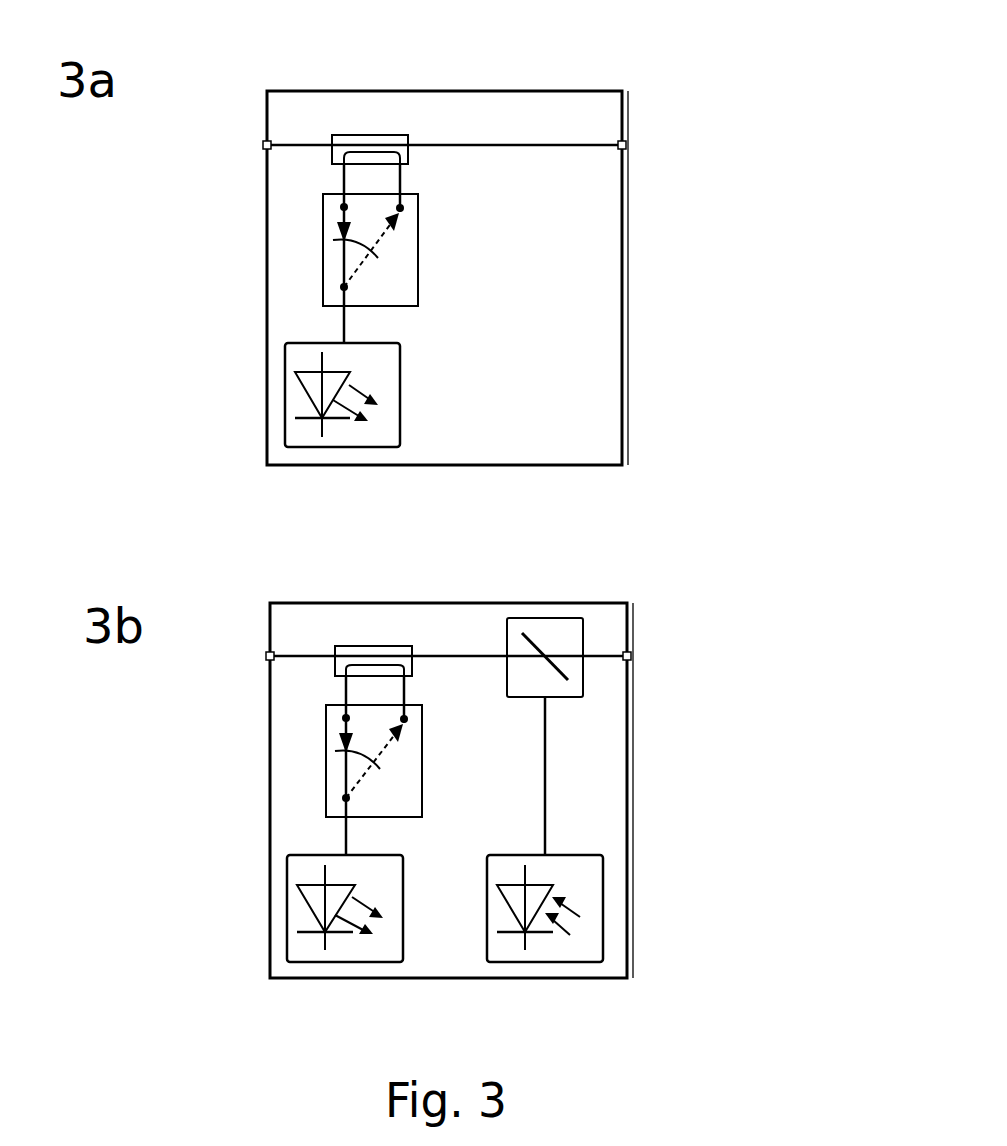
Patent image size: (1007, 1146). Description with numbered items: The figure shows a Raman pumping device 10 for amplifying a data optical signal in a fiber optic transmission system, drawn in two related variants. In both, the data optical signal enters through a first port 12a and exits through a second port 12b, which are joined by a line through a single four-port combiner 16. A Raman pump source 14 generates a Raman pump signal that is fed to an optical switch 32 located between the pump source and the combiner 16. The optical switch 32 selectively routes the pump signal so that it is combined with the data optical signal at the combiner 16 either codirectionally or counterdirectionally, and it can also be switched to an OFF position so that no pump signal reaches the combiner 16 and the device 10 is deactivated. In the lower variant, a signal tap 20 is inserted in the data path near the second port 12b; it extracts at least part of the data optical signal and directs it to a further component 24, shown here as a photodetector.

The Raman pumping device 10 is at (663, 303).
The first port 12a is at (263, 145).
The second port 12b is at (630, 145).
The Raman pump source 14 is at (285, 393).
The four-port combiner 16 is at (368, 134).
The signal tap 20 is at (546, 622).
The photodetector 24 is at (603, 900).
The optical switch 32 is at (323, 268).